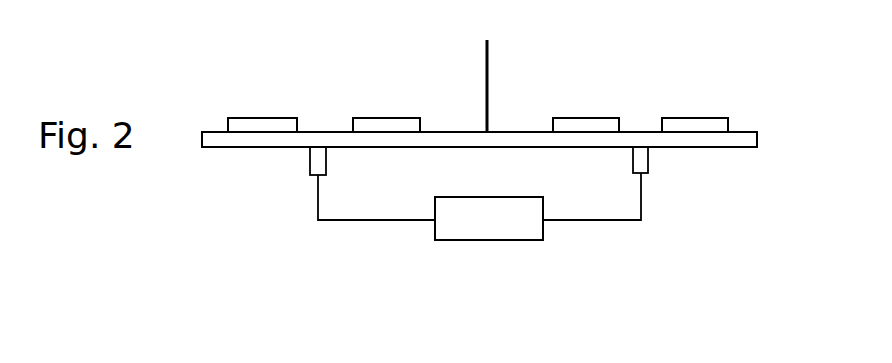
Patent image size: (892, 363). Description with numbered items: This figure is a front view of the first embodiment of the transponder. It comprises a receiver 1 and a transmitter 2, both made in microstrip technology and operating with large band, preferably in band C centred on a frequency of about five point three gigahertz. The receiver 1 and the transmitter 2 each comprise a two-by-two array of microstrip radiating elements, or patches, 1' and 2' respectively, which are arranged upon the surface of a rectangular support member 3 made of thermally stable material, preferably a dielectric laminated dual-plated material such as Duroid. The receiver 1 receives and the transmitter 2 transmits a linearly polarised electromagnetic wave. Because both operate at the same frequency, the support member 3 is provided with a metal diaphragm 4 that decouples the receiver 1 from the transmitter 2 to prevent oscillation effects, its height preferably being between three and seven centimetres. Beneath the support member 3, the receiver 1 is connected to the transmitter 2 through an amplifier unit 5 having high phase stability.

The receiver 1 is at (326, 50).
The microstrip radiating elements 1' is at (333, 102).
The transmitter 2 is at (640, 49).
The microstrip radiating elements 2' is at (650, 102).
The support member 3 is at (672, 135).
The metal diaphragm 4 is at (488, 53).
The amplifier unit 5 is at (495, 240).